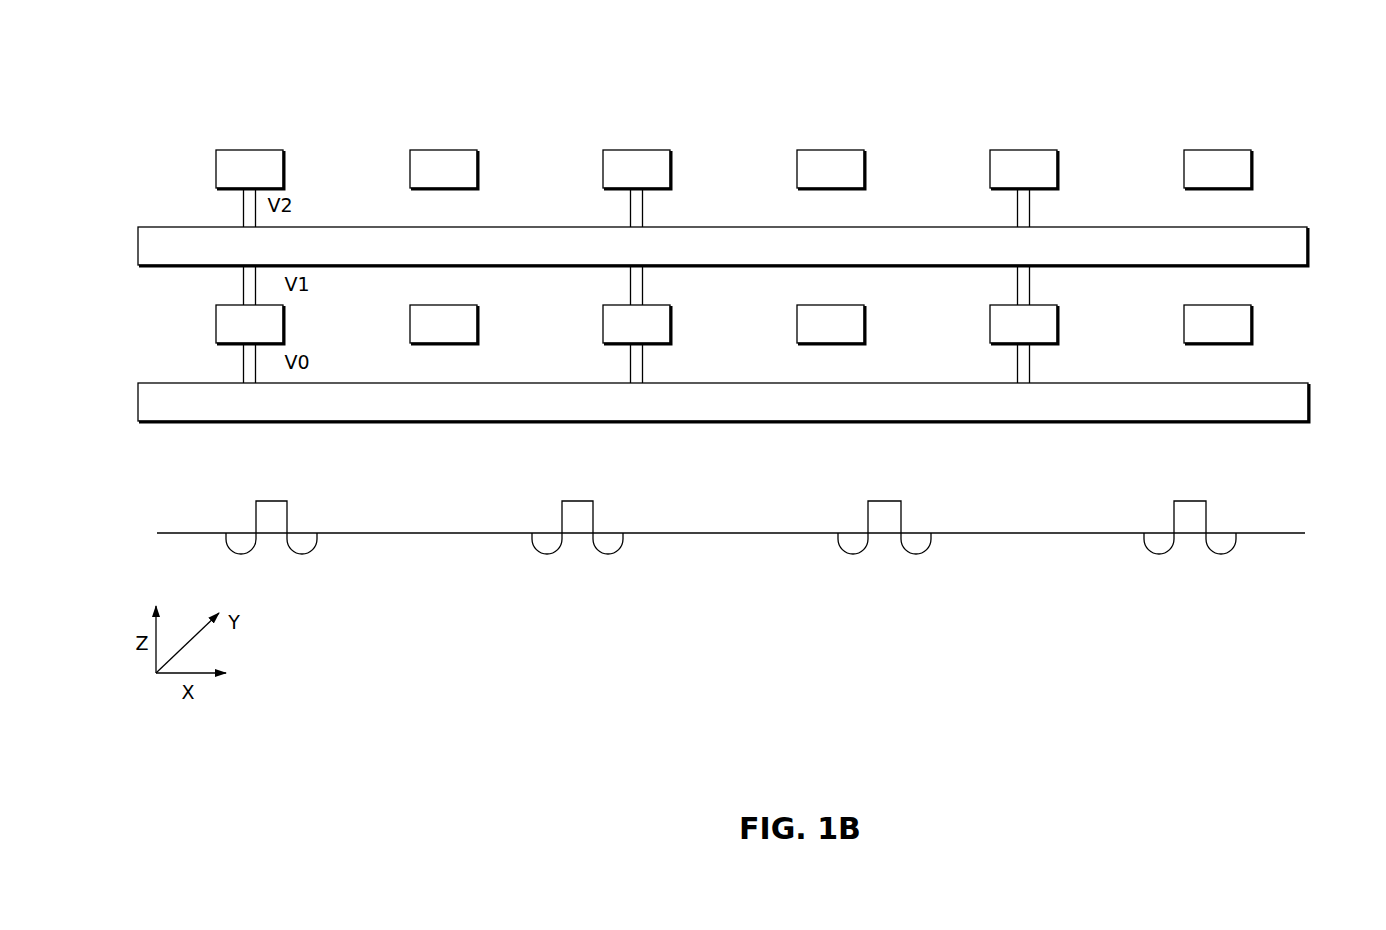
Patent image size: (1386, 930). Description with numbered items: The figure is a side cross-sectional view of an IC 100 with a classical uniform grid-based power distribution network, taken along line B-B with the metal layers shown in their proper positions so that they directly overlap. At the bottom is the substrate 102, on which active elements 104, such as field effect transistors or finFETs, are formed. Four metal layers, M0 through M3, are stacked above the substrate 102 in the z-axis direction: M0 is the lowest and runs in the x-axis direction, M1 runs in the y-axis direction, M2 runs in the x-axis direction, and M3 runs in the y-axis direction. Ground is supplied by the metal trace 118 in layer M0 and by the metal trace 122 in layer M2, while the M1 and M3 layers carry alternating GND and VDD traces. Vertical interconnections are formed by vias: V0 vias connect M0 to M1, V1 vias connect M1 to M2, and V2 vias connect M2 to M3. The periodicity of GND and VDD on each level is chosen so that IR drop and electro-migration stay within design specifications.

The IC 100 is at (1286, 80).
The substrate 102 is at (731, 569).
The active elements 104 is at (240, 497).
The metal trace 118 is at (150, 422).
The metal trace 122 is at (187, 227).